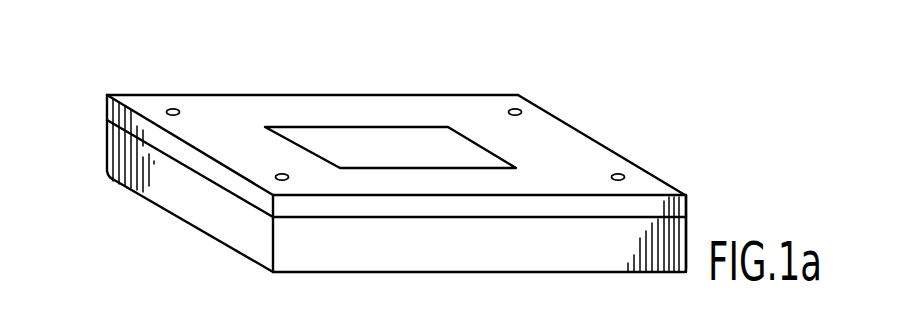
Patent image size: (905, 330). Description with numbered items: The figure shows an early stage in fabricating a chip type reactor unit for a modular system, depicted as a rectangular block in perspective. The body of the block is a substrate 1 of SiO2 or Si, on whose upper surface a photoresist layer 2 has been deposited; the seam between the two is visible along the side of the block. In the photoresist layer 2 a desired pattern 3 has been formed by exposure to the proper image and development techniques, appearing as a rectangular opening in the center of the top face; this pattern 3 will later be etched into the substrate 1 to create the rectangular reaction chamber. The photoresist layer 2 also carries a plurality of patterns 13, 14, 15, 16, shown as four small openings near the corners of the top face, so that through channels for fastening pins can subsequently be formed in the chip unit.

The block substrate 1 is at (172, 176).
The photoresist layer 2 is at (587, 135).
The pattern 3 is at (390, 147).
The pattern 13 is at (533, 103).
The pattern 14 is at (653, 173).
The pattern 15 is at (201, 95).
The pattern 16 is at (250, 201).